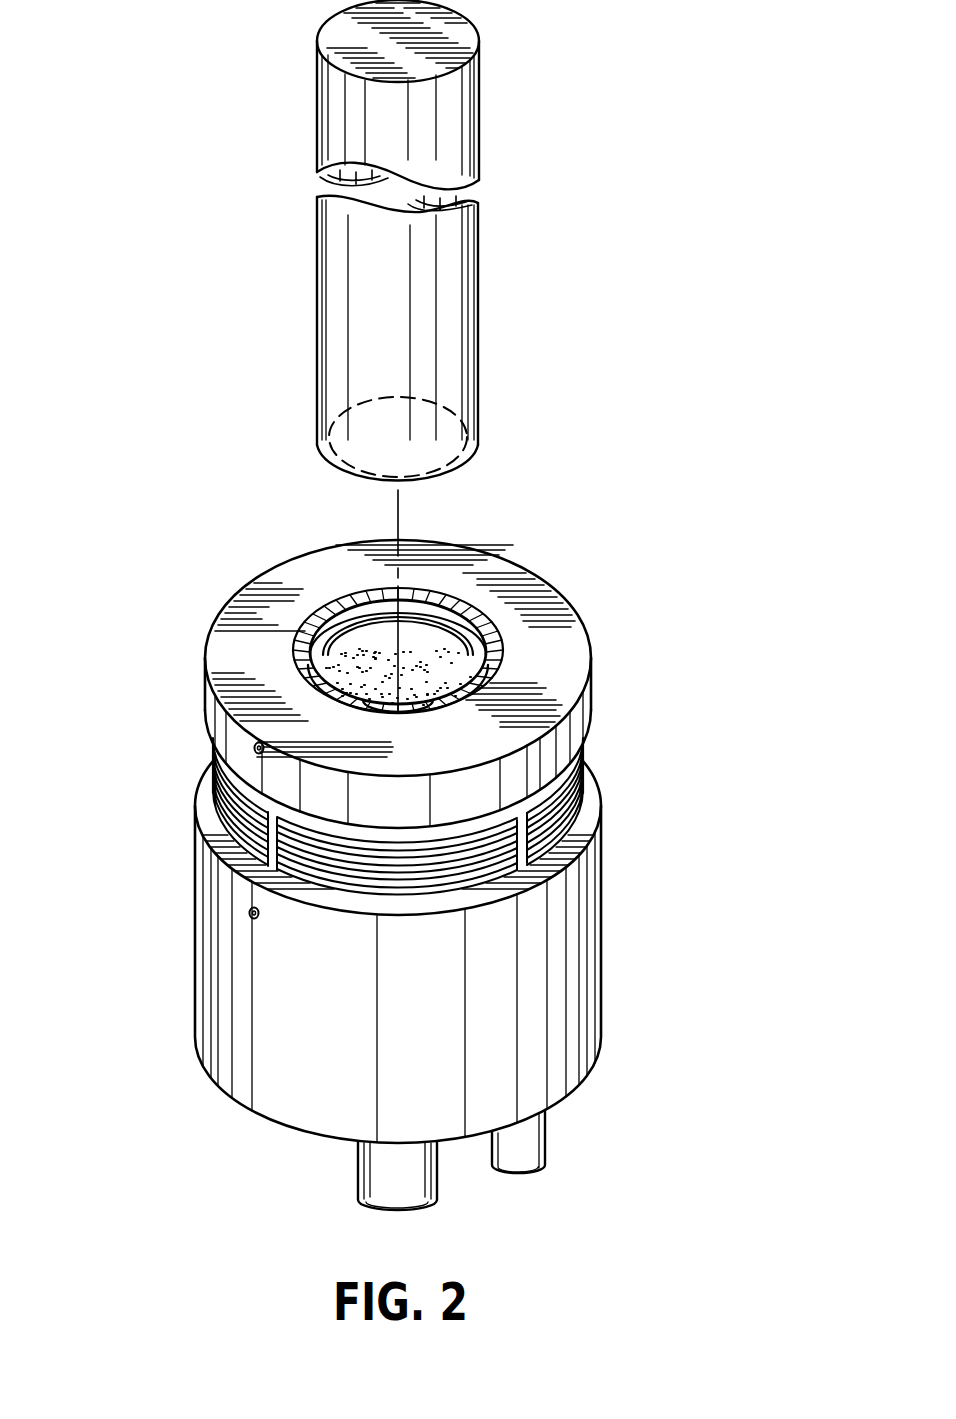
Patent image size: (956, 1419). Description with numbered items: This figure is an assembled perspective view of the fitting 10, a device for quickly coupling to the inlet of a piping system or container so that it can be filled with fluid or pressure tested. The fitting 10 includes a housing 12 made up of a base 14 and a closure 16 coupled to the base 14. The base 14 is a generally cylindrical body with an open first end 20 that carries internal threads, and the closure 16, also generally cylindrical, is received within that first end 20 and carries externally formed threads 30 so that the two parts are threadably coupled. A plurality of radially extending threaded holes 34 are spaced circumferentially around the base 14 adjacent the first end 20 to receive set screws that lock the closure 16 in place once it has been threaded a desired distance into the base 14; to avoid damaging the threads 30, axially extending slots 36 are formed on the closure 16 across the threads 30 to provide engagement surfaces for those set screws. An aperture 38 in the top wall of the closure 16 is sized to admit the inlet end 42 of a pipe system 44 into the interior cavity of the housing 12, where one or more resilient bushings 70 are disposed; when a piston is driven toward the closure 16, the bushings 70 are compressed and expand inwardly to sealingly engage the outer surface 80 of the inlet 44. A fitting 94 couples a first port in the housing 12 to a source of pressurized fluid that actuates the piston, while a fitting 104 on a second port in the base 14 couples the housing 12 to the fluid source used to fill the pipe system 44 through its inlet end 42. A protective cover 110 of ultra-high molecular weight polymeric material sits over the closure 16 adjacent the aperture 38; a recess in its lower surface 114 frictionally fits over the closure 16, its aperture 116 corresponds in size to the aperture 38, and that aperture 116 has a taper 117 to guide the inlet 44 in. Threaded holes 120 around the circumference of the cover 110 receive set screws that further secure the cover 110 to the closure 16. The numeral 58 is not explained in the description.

The fitting 10 is at (724, 486).
The housing 12 is at (627, 680).
The base 14 is at (612, 931).
The closure 16 is at (205, 783).
The first end 20 is at (195, 833).
The threads 30 is at (577, 816).
The threaded holes 34 is at (259, 916).
The slots 36 is at (268, 863).
The aperture 38 is at (448, 600).
The inlet end 42 is at (318, 444).
The pipe system 44 is at (483, 115).
The body side wall 58 is at (195, 1030).
The resilient bushing 70 is at (330, 674).
The outer surface 80 is at (316, 258).
The fitting 94 is at (546, 1152).
The fitting 104 is at (358, 1176).
The protective cover 110 is at (567, 586).
The lower surface 114 is at (592, 727).
The aperture 116 is at (474, 636).
The taper 117 is at (372, 603).
The threaded holes 120 is at (254, 747).